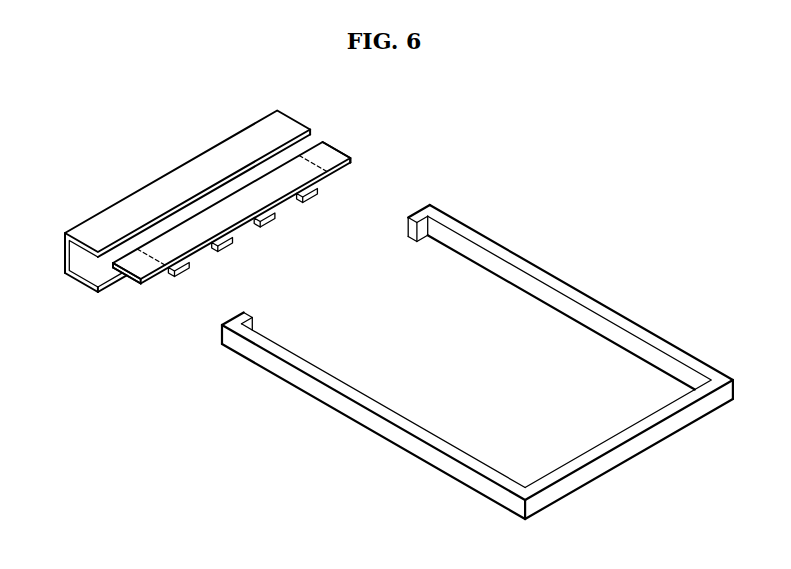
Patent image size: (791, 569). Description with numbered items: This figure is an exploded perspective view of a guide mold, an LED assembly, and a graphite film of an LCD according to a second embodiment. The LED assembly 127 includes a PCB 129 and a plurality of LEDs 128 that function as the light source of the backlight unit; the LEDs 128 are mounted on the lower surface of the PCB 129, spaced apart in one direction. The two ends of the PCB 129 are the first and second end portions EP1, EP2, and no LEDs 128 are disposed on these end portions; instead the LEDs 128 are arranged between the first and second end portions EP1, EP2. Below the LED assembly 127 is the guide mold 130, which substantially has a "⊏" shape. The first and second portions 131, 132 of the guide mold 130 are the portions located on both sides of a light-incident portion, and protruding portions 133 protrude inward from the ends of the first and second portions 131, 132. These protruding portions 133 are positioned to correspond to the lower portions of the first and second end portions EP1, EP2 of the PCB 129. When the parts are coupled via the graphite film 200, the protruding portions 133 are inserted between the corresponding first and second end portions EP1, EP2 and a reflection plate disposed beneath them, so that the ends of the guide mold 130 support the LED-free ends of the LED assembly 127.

The graphite film 200 is at (128, 203).
The LED assembly 127 is at (219, 251).
The LEDs 128 is at (182, 272).
The PCB 129 is at (157, 282).
The first end portion EP1 is at (333, 155).
The second end portion EP2 is at (126, 279).
The guide mold 130 is at (477, 360).
The first portion 131 is at (528, 270).
The second portion 132 is at (410, 452).
The protruding portions 133 is at (429, 235).